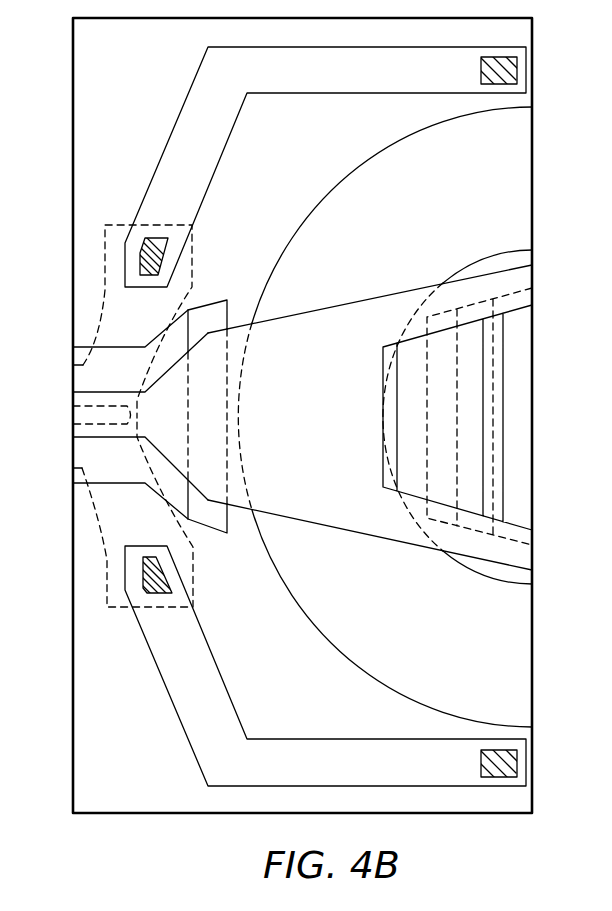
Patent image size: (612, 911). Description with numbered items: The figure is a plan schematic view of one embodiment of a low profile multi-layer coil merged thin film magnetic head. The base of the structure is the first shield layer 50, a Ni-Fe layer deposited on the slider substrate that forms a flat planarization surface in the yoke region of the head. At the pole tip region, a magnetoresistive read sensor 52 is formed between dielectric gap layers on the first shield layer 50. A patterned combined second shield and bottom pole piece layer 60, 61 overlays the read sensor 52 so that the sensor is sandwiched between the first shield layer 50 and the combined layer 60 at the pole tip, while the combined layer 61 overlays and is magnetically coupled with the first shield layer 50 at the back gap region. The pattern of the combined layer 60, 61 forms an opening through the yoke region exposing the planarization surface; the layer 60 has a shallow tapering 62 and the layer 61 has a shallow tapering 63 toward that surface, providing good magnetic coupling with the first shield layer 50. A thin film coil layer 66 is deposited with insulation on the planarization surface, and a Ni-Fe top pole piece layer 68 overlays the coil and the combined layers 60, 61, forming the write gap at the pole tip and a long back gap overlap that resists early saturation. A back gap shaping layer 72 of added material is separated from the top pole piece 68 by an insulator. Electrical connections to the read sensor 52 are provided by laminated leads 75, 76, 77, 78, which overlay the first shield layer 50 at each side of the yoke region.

The first shield layer 50 is at (73, 753).
The read sensor 52 is at (73, 417).
The combined second shield and bottom pole piece layer 60 is at (97, 457).
The combined second shield and bottom pole piece layer 61 is at (532, 537).
The tapering 62 is at (208, 518).
The tapering 63 is at (437, 505).
The thin film coil layer 66 is at (527, 180).
The top pole piece layer 68 is at (350, 302).
The back gap shaping layer 72 is at (525, 457).
The laminated lead 75 is at (100, 303).
The laminated lead 76 is at (104, 572).
The laminated lead 77 is at (165, 147).
The laminated lead 78 is at (167, 682).